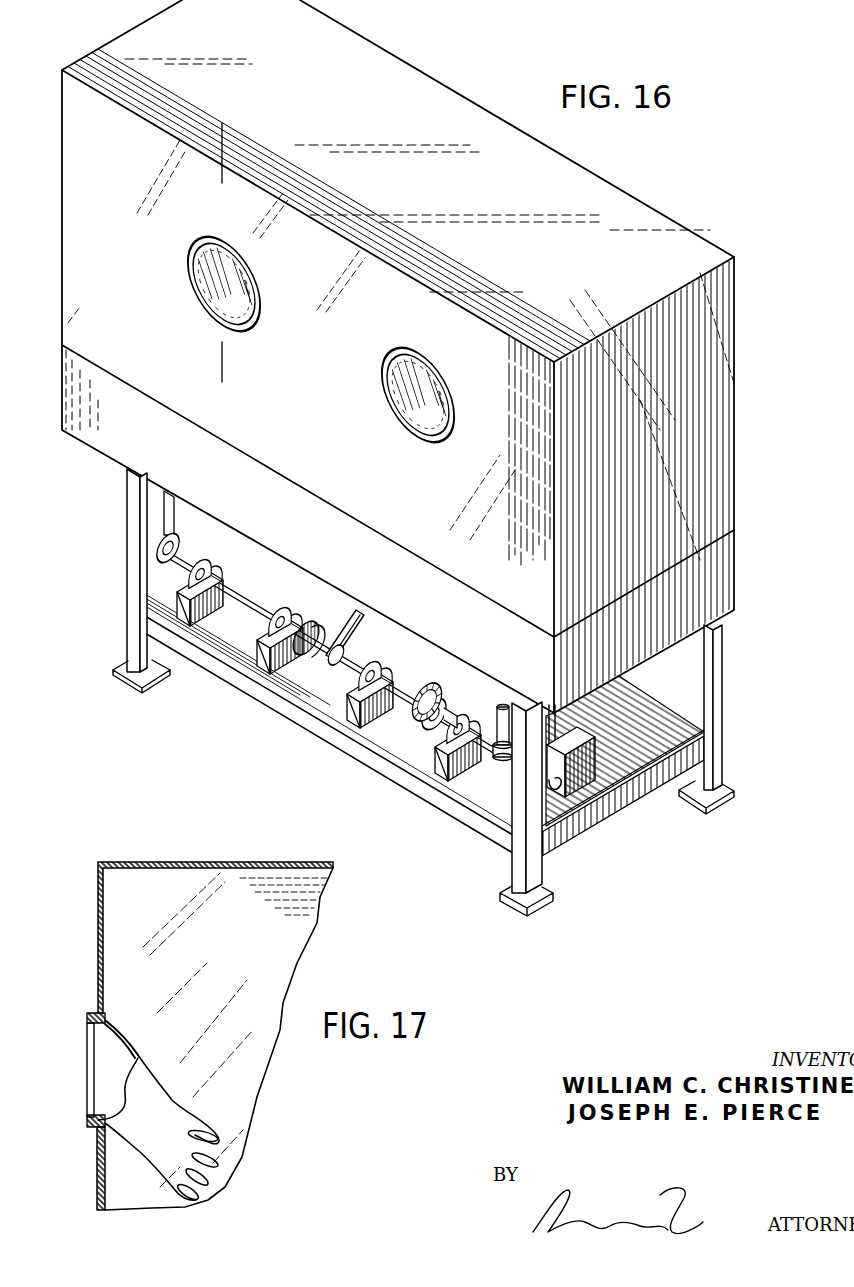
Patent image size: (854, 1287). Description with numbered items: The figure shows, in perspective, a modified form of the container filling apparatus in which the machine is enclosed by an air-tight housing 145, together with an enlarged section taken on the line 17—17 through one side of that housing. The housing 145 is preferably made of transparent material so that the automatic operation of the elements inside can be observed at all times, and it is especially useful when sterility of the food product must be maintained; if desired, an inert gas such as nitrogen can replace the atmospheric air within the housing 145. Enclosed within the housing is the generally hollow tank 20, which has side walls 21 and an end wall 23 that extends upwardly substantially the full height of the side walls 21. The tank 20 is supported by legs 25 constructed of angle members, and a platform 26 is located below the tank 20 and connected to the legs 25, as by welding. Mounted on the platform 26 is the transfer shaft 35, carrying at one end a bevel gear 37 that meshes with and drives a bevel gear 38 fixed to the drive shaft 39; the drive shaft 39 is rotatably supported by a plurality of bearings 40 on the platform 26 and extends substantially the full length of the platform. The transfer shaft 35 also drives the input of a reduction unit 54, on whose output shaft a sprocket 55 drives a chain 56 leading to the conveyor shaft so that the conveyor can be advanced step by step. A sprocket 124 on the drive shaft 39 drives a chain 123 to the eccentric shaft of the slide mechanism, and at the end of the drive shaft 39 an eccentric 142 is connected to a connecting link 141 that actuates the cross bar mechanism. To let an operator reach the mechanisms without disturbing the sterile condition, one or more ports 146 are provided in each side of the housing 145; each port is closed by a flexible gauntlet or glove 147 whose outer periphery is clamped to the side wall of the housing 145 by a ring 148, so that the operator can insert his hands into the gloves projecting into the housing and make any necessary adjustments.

In FIG. 16, the tank 20 is at (153, 470).
In FIG. 16, the side walls 21 is at (108, 440).
In FIG. 16, the end wall 23 is at (715, 576).
In FIG. 16, the legs 25 is at (133, 601).
In FIG. 16, the platform 26 is at (386, 740).
In FIG. 16, the transfer shaft 35 is at (452, 680).
In FIG. 16, the bevel gear 37 is at (433, 685).
In FIG. 16, the bevel gear 38 is at (431, 724).
In FIG. 16, the drive shaft 39 is at (345, 670).
In FIG. 16, the bearings 40 is at (200, 563).
In FIG. 16, the reduction unit 54 is at (592, 748).
In FIG. 16, the sprocket 55 is at (557, 775).
In FIG. 16, the chain 56 is at (557, 720).
In FIG. 16, the chain 123 is at (339, 614).
In FIG. 16, the sprocket 124 is at (330, 657).
In FIG. 16, the connecting link 141 is at (167, 516).
In FIG. 16, the eccentric 142 is at (181, 537).
In FIG. 16, the housing 145 is at (624, 200).
In FIG. 17, the housing 145 is at (207, 862).
In FIG. 16, the ports 146 is at (228, 284).
In FIG. 17, the ports 146 is at (100, 1020).
In FIG. 16, the glove 147 is at (205, 292).
In FIG. 17, the glove 147 is at (158, 1097).
In FIG. 16, the ring 148 is at (206, 242).
In FIG. 17, the ring 148 is at (87, 1017).
In FIG. 16, the section line of FIG. 17 is at (230, 137).